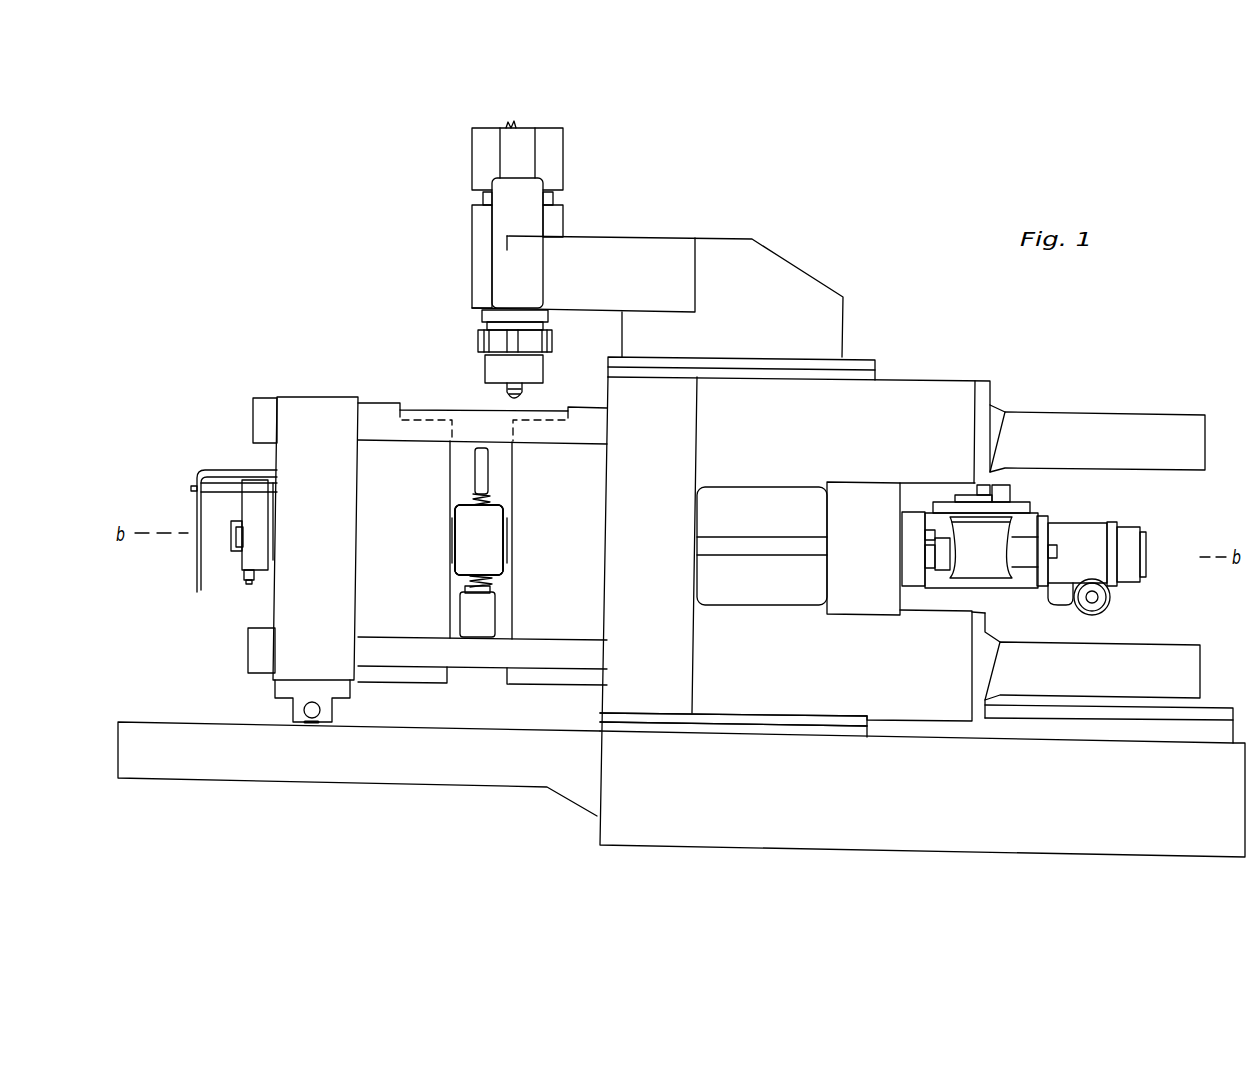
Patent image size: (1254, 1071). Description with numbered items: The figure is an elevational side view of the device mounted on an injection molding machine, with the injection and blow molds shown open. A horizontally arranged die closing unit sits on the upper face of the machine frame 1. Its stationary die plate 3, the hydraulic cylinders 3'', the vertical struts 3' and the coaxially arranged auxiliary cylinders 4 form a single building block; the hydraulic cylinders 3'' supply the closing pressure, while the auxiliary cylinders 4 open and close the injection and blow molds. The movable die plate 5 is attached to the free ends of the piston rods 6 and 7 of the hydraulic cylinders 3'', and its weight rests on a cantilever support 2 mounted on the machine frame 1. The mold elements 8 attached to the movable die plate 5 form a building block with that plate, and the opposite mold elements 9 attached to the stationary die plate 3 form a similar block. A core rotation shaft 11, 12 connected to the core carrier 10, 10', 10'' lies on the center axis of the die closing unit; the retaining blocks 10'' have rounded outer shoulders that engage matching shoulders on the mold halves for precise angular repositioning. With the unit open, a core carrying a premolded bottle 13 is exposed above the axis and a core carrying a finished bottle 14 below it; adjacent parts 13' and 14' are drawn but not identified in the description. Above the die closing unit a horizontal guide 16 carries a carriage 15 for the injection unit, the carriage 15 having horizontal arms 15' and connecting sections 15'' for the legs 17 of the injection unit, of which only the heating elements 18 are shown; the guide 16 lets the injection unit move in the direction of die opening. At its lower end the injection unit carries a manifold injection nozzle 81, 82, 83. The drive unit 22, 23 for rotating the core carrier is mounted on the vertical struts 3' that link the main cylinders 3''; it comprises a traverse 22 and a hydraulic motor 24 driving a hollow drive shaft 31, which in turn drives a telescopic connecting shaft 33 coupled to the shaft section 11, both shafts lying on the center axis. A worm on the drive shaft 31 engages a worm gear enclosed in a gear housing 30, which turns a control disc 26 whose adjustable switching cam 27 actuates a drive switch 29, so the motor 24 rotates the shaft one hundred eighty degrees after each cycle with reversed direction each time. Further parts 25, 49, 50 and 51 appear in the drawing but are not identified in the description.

The machine frame 1 is at (630, 833).
The cantilever support 2 is at (510, 768).
The stationary die plate 3 is at (756, 551).
The vertical struts 3' is at (772, 546).
The hydraulic cylinders 3'' is at (733, 739).
The auxiliary cylinders 4 is at (1168, 667).
The movable die plate 5 is at (318, 415).
The piston rod 6 is at (481, 659).
The piston rod 7 is at (426, 412).
The mold elements 8 is at (383, 485).
The opposite mold elements 9 is at (596, 502).
The core carrier 10 is at (511, 545).
The core carrier 10' is at (528, 545).
The retaining blocks 10'' is at (547, 545).
The core rotation shaft section 11 is at (508, 535).
The core rotation shaft 12 is at (272, 540).
The premolded bottle 13 is at (518, 471).
The spring 13' is at (519, 501).
The finished bottle 14 is at (445, 611).
The spring 14' is at (516, 598).
The carriage 15 is at (681, 296).
The horizontal arms 15' is at (560, 235).
The connecting sections 15'' is at (554, 234).
The horizontal guide 16 is at (857, 367).
The legs 17 is at (520, 152).
The heating elements 18 is at (492, 250).
The traverse 22 is at (915, 570).
The drive unit 23 is at (1032, 534).
The hydraulic motor 24 is at (1125, 558).
The roller 25 is at (1112, 607).
The control disc 26 is at (1020, 510).
The adjustable switching cam 27 is at (987, 490).
The drive switch 29 is at (1003, 490).
The gear housing 30 is at (978, 551).
The hollow drive shaft 31 is at (945, 556).
The telescopic connecting shaft 33 is at (767, 545).
The sensor block 49 is at (255, 503).
The sensor tip 50 is at (245, 574).
The bracket 51 is at (221, 468).
The manifold injection nozzle 81 is at (497, 340).
The manifold injection nozzle 82 is at (527, 371).
The manifold injection nozzle 83 is at (525, 393).